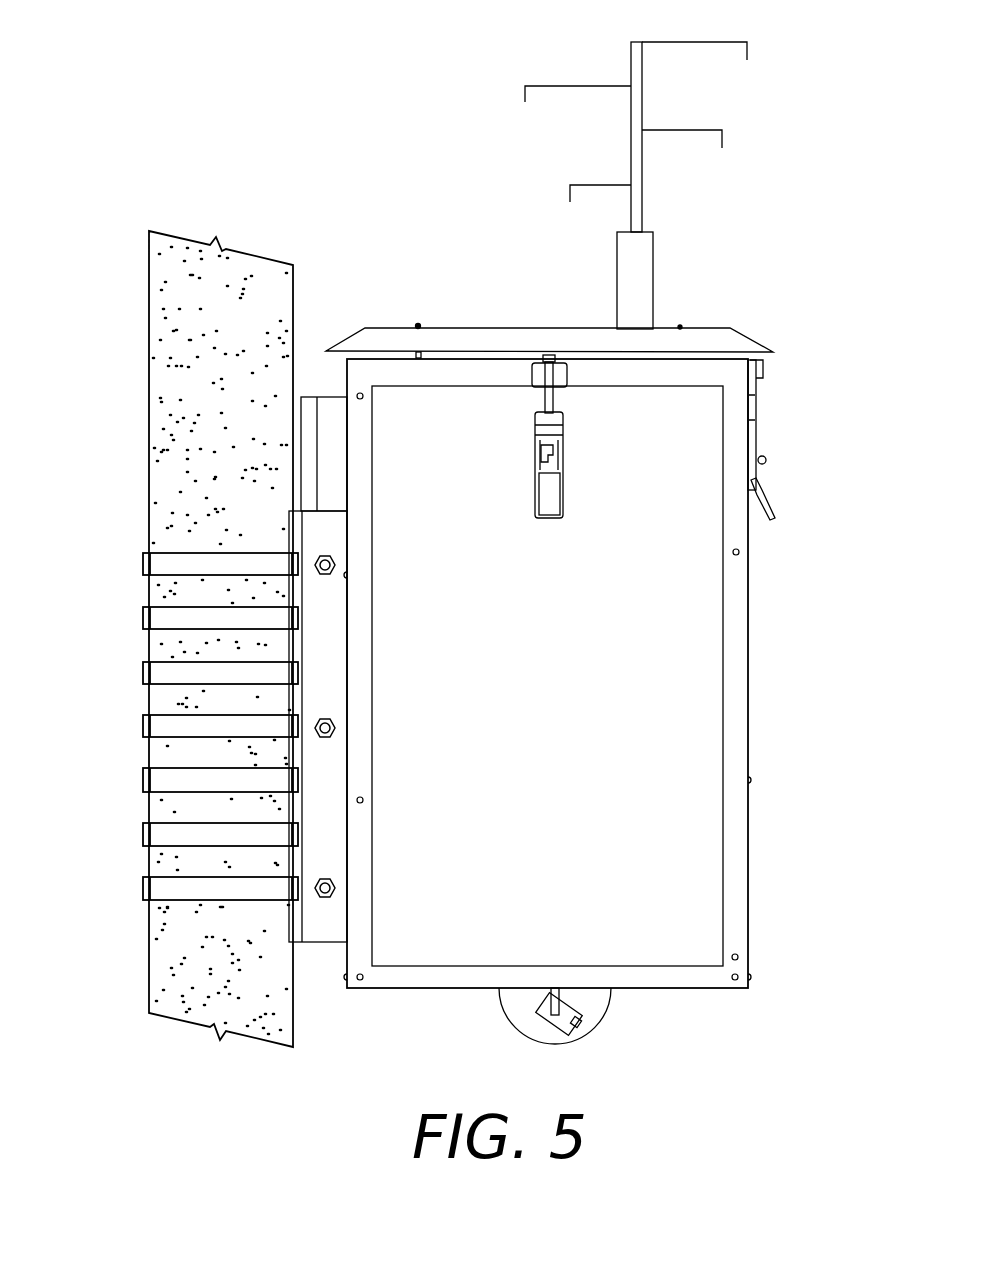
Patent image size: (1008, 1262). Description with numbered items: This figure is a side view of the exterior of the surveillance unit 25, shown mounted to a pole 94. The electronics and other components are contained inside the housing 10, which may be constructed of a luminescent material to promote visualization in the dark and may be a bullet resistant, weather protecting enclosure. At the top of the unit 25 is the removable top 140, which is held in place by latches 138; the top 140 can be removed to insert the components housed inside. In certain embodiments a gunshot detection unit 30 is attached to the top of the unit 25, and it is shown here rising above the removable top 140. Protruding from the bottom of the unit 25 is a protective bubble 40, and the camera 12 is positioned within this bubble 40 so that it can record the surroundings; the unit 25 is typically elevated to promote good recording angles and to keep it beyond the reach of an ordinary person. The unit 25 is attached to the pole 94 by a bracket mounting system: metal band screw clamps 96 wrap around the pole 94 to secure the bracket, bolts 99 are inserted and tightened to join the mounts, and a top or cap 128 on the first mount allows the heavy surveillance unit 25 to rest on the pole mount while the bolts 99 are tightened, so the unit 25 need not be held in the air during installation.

The housing 10 is at (710, 623).
The camera 12 is at (583, 1027).
The surveillance unit 25 is at (764, 321).
The gunshot detection unit 30 is at (633, 55).
The protective bubble 40 is at (512, 1020).
The pole 94 is at (165, 497).
The metal band screw clamp 96 is at (155, 673).
The bolts 99 is at (318, 560).
The top (cap) of first mount 128 is at (318, 397).
The latches 138 is at (548, 355).
The removable top 140 is at (505, 340).